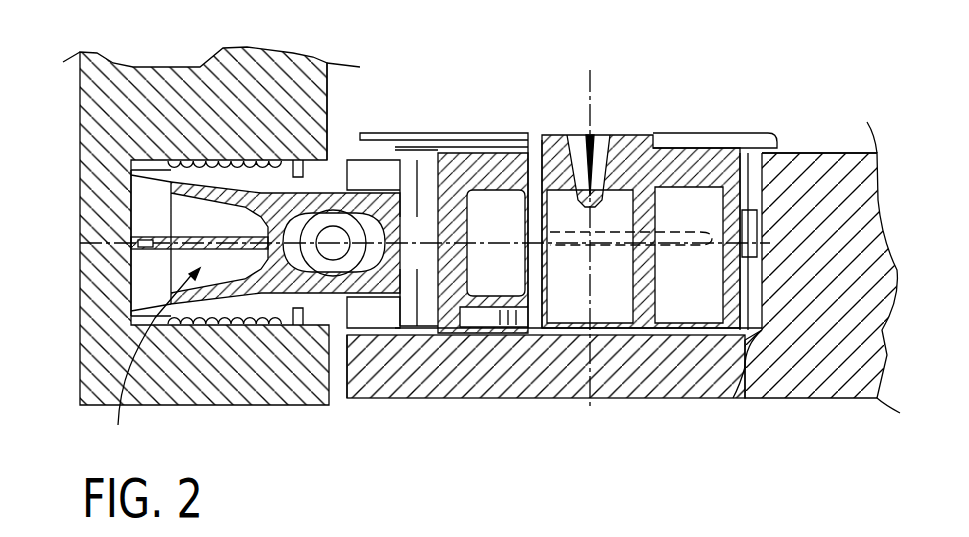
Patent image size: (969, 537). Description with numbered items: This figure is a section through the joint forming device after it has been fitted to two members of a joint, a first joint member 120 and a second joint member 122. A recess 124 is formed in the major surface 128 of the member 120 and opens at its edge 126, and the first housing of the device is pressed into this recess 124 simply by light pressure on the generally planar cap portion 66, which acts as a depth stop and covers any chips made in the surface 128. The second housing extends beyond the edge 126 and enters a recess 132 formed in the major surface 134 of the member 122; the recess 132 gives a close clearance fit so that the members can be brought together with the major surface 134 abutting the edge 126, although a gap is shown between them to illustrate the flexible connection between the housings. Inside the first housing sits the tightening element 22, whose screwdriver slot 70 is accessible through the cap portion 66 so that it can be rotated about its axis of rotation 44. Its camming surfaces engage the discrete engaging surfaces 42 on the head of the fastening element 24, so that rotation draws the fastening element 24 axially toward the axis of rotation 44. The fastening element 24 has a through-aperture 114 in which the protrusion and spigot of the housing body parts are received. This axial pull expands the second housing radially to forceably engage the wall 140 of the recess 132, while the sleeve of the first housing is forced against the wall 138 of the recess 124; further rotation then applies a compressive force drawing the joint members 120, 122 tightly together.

The joint member 122 is at (135, 66).
The major surface 134 is at (327, 82).
The wall 140 is at (337, 160).
The engaging surface 42 is at (455, 200).
The axis of rotation 44 is at (588, 83).
The screwdriver slot 70 is at (604, 140).
The tightening element 22 is at (670, 157).
The cap portion 66 is at (763, 138).
The major surface 128 is at (853, 153).
The fastening element 24 is at (143, 361).
The recess 132 is at (200, 333).
The through-aperture 114 is at (300, 253).
The edge 126 is at (345, 383).
The recess 124 is at (381, 335).
The wall 138 is at (733, 398).
The joint member 120 is at (827, 398).